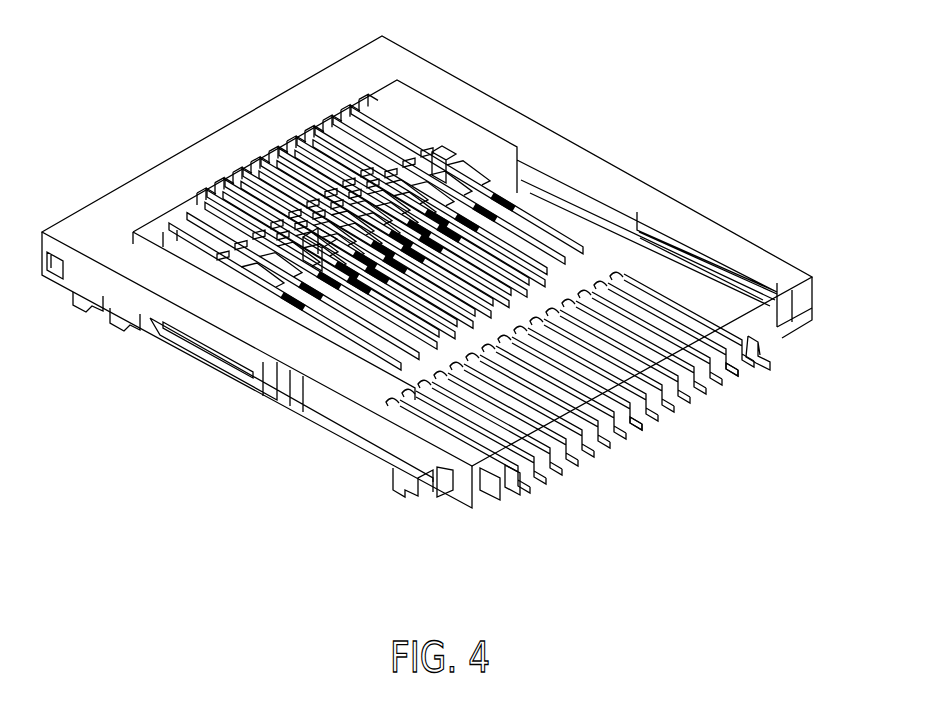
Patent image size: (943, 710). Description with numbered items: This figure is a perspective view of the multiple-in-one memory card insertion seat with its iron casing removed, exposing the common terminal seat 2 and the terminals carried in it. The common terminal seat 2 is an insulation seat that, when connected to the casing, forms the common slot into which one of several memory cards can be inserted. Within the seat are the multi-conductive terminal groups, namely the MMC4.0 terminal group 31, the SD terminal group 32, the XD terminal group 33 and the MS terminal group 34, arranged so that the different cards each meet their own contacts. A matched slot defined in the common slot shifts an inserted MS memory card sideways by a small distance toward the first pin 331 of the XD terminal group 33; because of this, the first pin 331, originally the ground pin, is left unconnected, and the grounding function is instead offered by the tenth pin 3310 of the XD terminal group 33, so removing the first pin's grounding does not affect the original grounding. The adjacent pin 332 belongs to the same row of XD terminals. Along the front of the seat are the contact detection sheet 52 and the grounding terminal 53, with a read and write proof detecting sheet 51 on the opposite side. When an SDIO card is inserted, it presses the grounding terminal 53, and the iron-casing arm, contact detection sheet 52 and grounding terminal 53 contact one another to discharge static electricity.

The common terminal seat 2 is at (268, 333).
The MMC4.0 terminal group 31 is at (530, 207).
The SD terminal group 32 is at (453, 197).
The XD terminal group 33 is at (627, 267).
The MS terminal group 34 is at (358, 125).
The first pin 331 is at (760, 360).
The terminal foot 332 is at (740, 373).
The tenth pin 3310 is at (645, 427).
The read and write proof detecting sheet 51 is at (330, 400).
The contact detection sheet 52 is at (88, 306).
The grounding terminal 53 is at (192, 346).